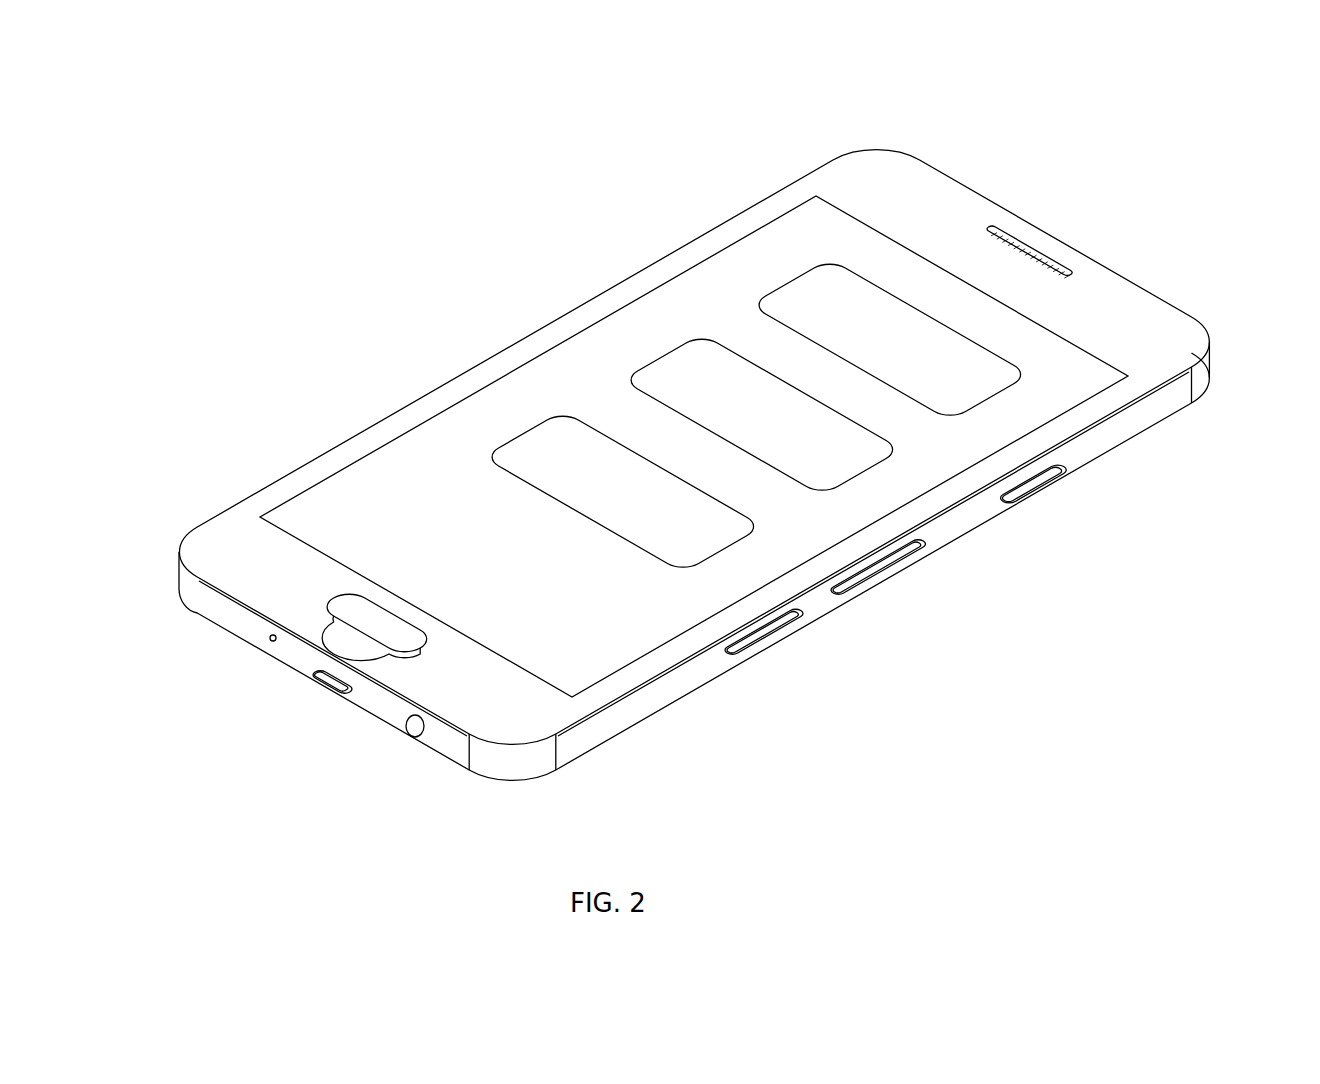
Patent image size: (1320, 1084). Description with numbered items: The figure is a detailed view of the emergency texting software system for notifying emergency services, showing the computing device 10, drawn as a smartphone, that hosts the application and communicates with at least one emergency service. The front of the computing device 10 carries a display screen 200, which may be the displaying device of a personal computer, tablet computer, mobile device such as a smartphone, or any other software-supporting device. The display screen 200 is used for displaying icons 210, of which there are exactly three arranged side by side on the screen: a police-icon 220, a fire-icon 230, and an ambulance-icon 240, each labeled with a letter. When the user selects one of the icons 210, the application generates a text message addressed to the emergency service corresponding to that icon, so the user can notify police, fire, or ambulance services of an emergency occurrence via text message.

The computing device 10 is at (947, 190).
The display screen 200 is at (342, 497).
The icons 210 is at (857, 396).
The police-icon 220 is at (703, 540).
The fire-icon 230 is at (848, 462).
The ambulance-icon 240 is at (975, 383).